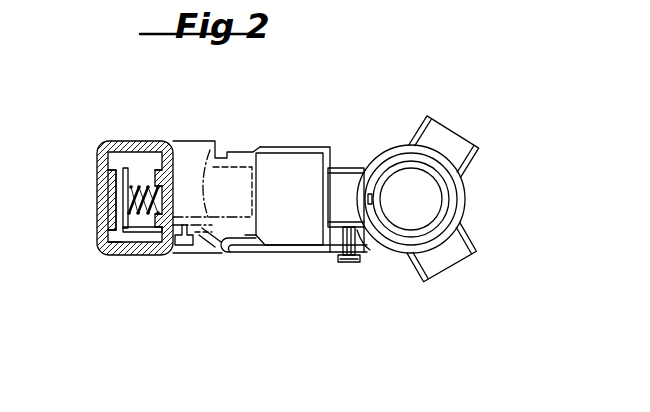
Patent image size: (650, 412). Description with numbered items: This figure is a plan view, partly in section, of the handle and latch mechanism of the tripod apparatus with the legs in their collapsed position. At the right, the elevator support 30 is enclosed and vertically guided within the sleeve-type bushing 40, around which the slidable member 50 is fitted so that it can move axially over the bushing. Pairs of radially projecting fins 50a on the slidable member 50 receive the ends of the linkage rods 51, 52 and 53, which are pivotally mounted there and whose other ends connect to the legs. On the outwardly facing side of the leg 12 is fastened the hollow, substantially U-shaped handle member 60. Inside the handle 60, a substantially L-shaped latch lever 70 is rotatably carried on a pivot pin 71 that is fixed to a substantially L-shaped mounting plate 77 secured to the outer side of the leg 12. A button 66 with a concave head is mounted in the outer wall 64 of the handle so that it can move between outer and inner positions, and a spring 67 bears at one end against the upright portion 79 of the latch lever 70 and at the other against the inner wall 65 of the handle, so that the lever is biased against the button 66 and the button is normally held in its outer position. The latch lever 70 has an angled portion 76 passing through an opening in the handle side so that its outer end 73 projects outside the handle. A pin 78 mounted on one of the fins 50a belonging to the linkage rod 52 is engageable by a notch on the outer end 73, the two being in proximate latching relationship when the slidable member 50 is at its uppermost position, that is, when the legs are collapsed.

The leg 12 is at (290, 166).
The elevator support 30 is at (443, 187).
The sleeve-type bushing 40 is at (452, 202).
The slidable member 50 is at (466, 208).
The fins 50a is at (370, 250).
The linkage rod 51 is at (443, 133).
The linkage rod 52 is at (348, 177).
The linkage rod 53 is at (447, 263).
The handle member 60 is at (95, 252).
The outer wall 64 is at (112, 232).
The inner wall 65 is at (177, 172).
The button 66 is at (100, 178).
The spring 67 is at (150, 188).
The latch lever 70 is at (139, 237).
The pivot pin 71 is at (188, 246).
The outer end 73 is at (273, 254).
The angled portion 76 is at (210, 247).
The mounting plate 77 is at (220, 152).
The pin 78 is at (349, 264).
The upright portion 79 is at (125, 185).